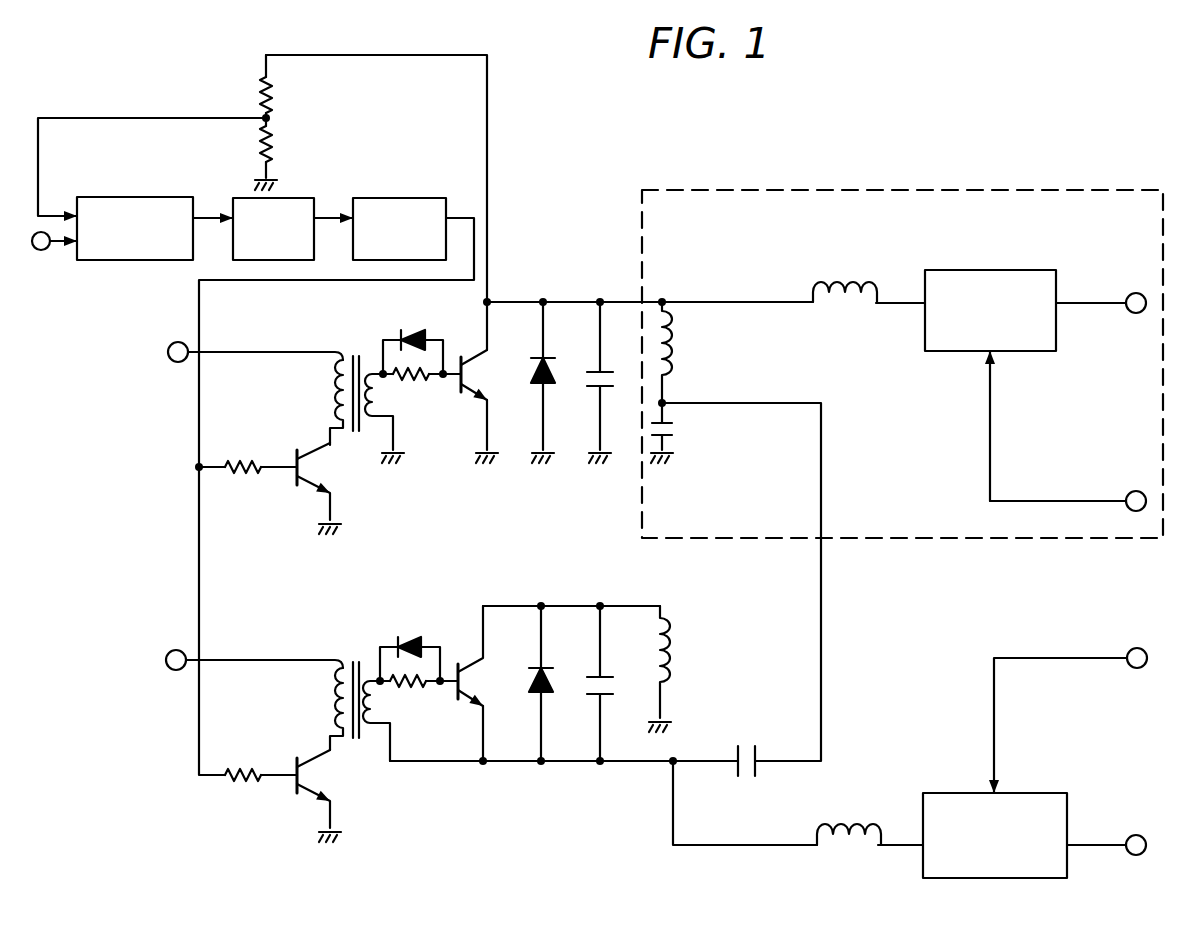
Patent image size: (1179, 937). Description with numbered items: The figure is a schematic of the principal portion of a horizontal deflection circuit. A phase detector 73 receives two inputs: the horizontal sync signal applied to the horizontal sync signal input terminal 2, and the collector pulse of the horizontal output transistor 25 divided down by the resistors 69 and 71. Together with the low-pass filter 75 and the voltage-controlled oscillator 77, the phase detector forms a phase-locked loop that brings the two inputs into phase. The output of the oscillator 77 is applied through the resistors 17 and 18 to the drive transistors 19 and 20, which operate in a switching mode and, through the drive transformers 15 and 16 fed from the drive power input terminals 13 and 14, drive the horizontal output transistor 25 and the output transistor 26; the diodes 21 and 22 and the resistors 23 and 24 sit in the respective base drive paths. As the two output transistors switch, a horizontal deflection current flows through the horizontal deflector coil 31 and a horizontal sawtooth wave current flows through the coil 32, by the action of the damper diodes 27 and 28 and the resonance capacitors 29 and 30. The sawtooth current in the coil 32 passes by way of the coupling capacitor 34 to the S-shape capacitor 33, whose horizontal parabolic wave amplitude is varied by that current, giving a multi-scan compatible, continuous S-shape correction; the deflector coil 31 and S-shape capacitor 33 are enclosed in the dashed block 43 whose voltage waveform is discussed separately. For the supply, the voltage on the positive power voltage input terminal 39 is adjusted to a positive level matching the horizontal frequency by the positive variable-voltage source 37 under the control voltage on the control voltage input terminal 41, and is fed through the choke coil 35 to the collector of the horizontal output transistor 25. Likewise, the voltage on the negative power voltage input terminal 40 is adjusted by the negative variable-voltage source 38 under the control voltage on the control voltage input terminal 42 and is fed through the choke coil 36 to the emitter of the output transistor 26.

The horizontal sync signal input terminal 2 is at (43, 252).
The drive power input terminal 13 is at (169, 346).
The drive power input terminal 14 is at (166, 653).
The drive transformer 15 is at (352, 350).
The drive transformer 16 is at (350, 658).
The resistor 17 is at (243, 455).
The resistor 18 is at (238, 764).
The drive transistor 19 is at (309, 449).
The drive transistor 20 is at (306, 759).
The diode 21 is at (396, 333).
The diode 22 is at (396, 639).
The resistor 23 is at (410, 382).
The resistor 24 is at (405, 690).
The horizontal output transistor 25 is at (477, 376).
The output transistor 26 is at (479, 697).
The damper diode 27 is at (555, 367).
The damper diode 28 is at (553, 662).
The resonance capacitor 29 is at (611, 371).
The resonance capacitor 30 is at (609, 676).
The horizontal deflector coil 31 is at (684, 362).
The coil 32 is at (685, 663).
The S-shape capacitor 33 is at (672, 432).
The coupling capacitor 34 is at (753, 744).
The choke coil 35 is at (846, 282).
The choke coil 36 is at (847, 817).
The positive variable-voltage source 37 is at (1019, 271).
The negative variable-voltage source 38 is at (1034, 793).
The positive power voltage input terminal 39 is at (1131, 295).
The negative power voltage input terminal 40 is at (1131, 836).
The control voltage input terminal 41 is at (1130, 491).
The control voltage input terminal 42 is at (1130, 651).
The voltage waveform 43 is at (639, 257).
The resistor 69 is at (260, 96).
The resistor 71 is at (274, 145).
The phase detector 73 is at (170, 198).
The low-pass filter 75 is at (297, 198).
The voltage-controlled oscillator 77 is at (415, 198).